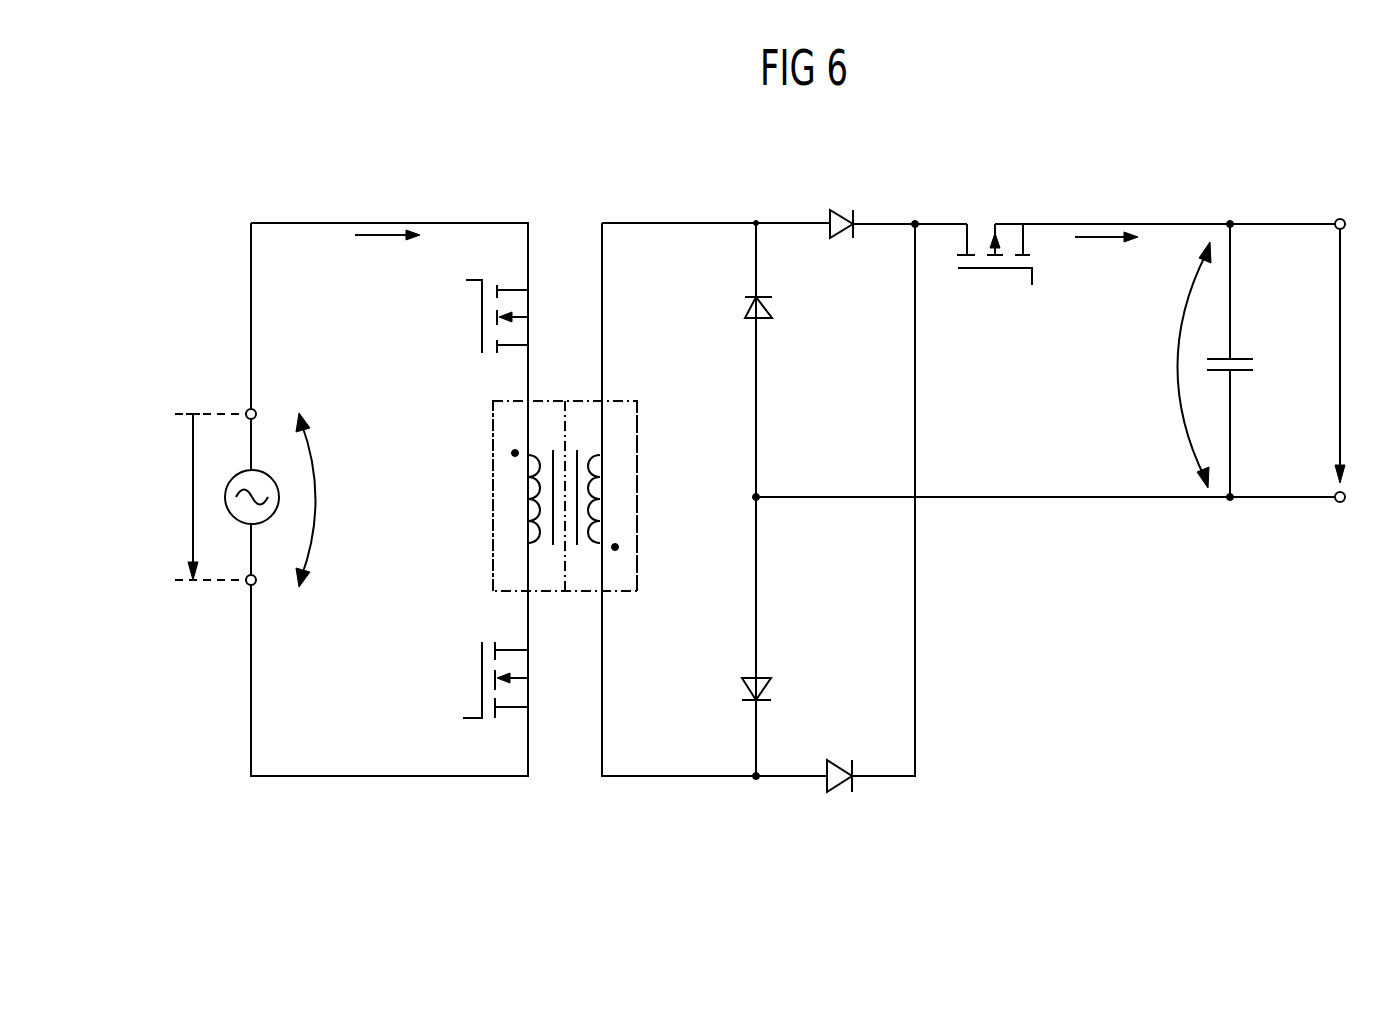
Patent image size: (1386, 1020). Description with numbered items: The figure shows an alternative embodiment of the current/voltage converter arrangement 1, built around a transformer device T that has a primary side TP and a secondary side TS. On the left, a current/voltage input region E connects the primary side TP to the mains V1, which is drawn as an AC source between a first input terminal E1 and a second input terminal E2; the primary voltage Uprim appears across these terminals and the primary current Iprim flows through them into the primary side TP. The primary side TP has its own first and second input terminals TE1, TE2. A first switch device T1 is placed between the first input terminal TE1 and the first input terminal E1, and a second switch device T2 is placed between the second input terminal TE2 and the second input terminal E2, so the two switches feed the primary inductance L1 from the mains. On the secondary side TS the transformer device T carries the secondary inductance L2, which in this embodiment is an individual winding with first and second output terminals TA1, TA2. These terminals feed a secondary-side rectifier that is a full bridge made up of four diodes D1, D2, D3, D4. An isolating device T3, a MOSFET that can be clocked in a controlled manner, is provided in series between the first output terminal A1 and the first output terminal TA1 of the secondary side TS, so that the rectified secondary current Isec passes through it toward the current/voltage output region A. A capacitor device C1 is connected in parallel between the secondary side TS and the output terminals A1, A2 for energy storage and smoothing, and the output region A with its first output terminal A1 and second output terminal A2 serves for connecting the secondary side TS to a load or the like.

The current/voltage converter arrangement 1 is at (1002, 737).
The first input terminal E1 is at (251, 315).
The second input terminal E2 is at (251, 708).
The primary voltage Uprim is at (193, 457).
The mains V1 is at (256, 468).
The current/voltage input region E is at (314, 497).
The primary current Iprim is at (387, 255).
The first switch device T1 is at (458, 311).
The second switch device T2 is at (458, 682).
The first input terminal of the primary side TE1 is at (528, 372).
The second input terminal of the primary side TE2 is at (528, 627).
The transformer device T is at (556, 496).
The primary side TP is at (493, 440).
The secondary side TS is at (637, 438).
The primary inductance L1 is at (522, 510).
The secondary inductance L2 is at (603, 510).
The first output terminal of the secondary inductance TA1 is at (602, 283).
The second output terminal of the secondary inductance TA2 is at (602, 682).
The diode D1 is at (843, 233).
The diode D2 is at (843, 757).
The diode D3 is at (768, 307).
The diode D4 is at (772, 688).
The isolating device T3 is at (999, 288).
The secondary current Isec is at (1106, 253).
The current/voltage output region A is at (1177, 397).
The capacitor device C1 is at (1248, 360).
The first output terminal A1 is at (1277, 223).
The second output terminal A2 is at (1273, 498).